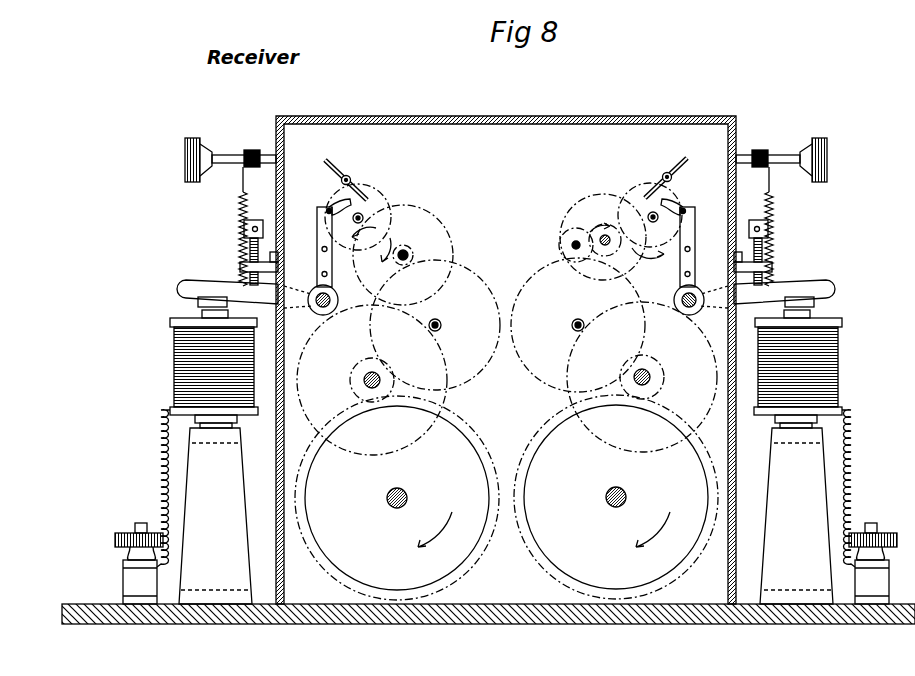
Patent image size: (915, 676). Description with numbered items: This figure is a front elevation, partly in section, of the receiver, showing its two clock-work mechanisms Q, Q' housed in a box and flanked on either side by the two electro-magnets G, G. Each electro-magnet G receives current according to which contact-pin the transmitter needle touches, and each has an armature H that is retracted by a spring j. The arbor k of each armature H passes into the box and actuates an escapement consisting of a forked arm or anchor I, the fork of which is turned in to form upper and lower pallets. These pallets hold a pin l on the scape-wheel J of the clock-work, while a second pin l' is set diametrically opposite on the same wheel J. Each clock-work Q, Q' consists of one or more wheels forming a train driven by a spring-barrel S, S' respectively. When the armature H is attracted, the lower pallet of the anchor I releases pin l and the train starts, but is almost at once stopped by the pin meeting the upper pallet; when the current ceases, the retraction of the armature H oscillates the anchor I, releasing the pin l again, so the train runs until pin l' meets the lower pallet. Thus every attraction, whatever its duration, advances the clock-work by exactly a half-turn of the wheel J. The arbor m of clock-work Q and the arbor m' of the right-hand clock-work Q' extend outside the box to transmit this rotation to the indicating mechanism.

The armature H is at (506, 283).
The spring j is at (504, 226).
The electro-magnet G is at (506, 457).
The forked arm or anchor I is at (501, 243).
The pin l is at (508, 195).
The pin l' is at (503, 209).
The scape-wheel J is at (374, 204).
The arbor k is at (339, 301).
The arbor m is at (402, 255).
The arbor m' is at (611, 237).
The clock-work mechanism Q is at (398, 357).
The clock-work mechanism Q' is at (614, 355).
The spring-barrel S is at (397, 498).
The spring-barrel S' is at (616, 497).